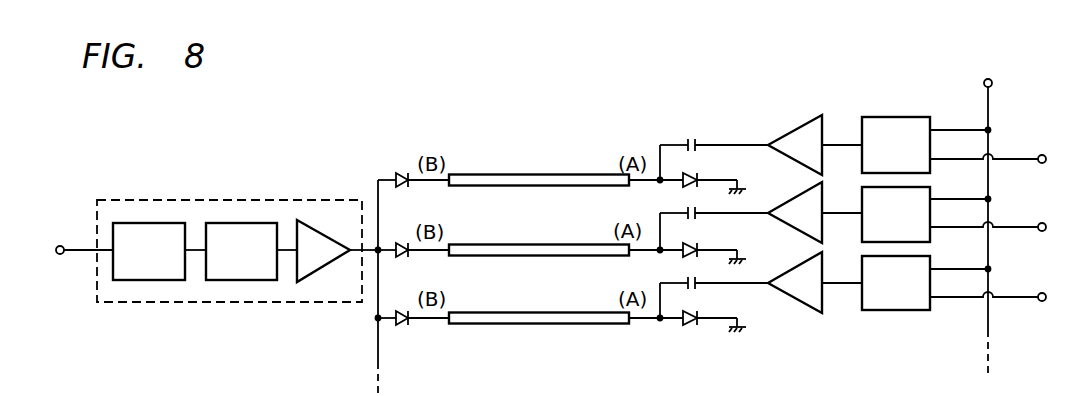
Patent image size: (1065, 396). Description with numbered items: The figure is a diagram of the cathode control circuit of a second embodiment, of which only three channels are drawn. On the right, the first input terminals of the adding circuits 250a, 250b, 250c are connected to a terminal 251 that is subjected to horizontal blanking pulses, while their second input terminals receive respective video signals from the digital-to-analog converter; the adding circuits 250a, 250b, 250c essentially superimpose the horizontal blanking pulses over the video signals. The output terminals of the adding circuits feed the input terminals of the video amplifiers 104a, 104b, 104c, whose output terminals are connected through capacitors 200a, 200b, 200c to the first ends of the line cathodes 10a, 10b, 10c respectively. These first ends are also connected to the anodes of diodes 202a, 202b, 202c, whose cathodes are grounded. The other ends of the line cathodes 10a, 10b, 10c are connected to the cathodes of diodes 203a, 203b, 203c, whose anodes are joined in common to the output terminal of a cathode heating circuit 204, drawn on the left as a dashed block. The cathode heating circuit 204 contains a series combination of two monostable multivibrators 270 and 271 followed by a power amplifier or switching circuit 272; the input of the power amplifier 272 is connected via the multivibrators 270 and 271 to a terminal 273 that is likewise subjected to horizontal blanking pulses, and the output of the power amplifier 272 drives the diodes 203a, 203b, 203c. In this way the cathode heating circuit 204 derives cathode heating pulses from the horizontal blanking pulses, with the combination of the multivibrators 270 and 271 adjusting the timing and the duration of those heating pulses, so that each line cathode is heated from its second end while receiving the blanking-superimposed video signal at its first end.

The terminal 273 is at (60, 246).
The cathode heating circuit 204 is at (266, 200).
The monostable multivibrator 270 is at (143, 223).
The monostable multivibrator 271 is at (220, 223).
The power amplifier 272 is at (316, 231).
The diode 203a is at (401, 172).
The diode 203b is at (401, 243).
The diode 203c is at (401, 311).
The line cathode 10a is at (516, 174).
The line cathode 10b is at (522, 244).
The line cathode 10c is at (518, 312).
The diode 202a is at (683, 186).
The diode 202b is at (683, 256).
The diode 202c is at (686, 325).
The capacitor 200a is at (696, 141).
The capacitor 200b is at (695, 220).
The capacitor 200c is at (696, 290).
The video amplifier 104a is at (800, 127).
The video amplifier 104b is at (785, 203).
The video amplifier 104c is at (780, 276).
The adding circuit 250a is at (903, 117).
The adding circuit 250b is at (945, 192).
The adding circuit 250c is at (945, 265).
The terminal 251 is at (989, 79).